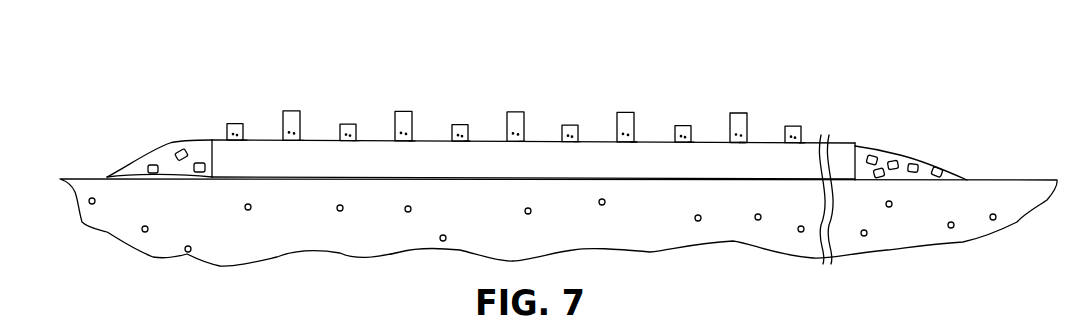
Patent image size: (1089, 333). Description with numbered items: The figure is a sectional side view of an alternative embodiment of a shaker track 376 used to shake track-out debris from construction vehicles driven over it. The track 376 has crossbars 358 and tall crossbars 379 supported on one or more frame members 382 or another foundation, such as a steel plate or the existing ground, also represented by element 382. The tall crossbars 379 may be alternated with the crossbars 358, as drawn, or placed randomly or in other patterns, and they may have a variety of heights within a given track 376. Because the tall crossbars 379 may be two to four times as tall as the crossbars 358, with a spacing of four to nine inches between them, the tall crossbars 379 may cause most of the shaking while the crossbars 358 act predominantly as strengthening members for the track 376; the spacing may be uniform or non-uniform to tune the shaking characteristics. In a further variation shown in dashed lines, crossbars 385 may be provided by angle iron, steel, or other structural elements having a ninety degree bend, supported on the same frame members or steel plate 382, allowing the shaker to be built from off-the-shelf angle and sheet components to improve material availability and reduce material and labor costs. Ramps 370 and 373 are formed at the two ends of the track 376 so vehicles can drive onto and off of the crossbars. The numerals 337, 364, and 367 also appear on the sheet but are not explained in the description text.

The lower sheet layer 337 is at (81, 332).
The crossbars 358 is at (229, 124).
The upper sheet layer 364 is at (870, 329).
The encapsulating layer 367 is at (767, 155).
The ramp 370 is at (167, 148).
The ramp 373 is at (887, 153).
The track 376 is at (209, 86).
The tall crossbars 379 is at (285, 111).
The frame members 382 is at (373, 218).
The crossbars 385 is at (244, 140).